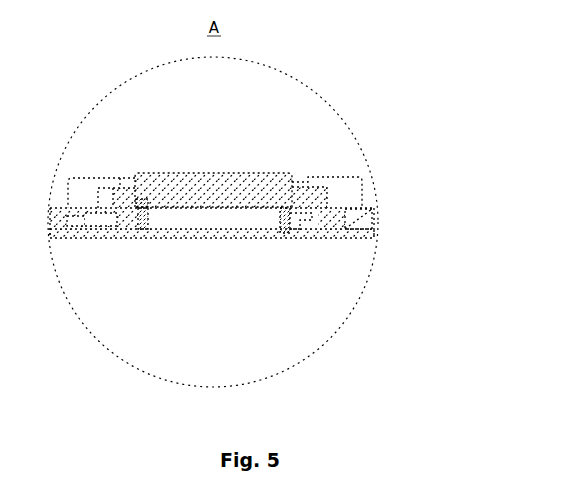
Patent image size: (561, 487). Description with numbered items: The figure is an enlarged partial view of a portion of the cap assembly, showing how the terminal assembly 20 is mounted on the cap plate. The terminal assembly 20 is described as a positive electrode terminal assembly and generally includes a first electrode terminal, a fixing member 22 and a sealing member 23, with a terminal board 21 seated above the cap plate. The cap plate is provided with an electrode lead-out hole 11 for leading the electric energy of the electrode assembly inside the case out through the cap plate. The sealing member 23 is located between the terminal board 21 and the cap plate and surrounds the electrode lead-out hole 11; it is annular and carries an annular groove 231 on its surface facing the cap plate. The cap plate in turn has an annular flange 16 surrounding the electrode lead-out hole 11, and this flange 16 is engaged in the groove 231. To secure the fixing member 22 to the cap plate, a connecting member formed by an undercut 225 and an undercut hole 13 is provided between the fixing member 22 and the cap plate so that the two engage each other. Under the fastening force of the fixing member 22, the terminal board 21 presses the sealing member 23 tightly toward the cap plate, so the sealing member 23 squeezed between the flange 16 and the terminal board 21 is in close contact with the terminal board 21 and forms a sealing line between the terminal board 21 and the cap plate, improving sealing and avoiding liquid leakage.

The terminal assembly 20 is at (130, 120).
The fixing member 22 is at (345, 201).
The terminal board 21 is at (257, 180).
The annular groove 231 is at (145, 202).
The annular flange 16 is at (143, 229).
The sealing member 23 is at (116, 230).
The undercut 225 is at (323, 230).
The undercut hole 13 is at (347, 231).
The electrode lead-out hole 11 is at (218, 238).